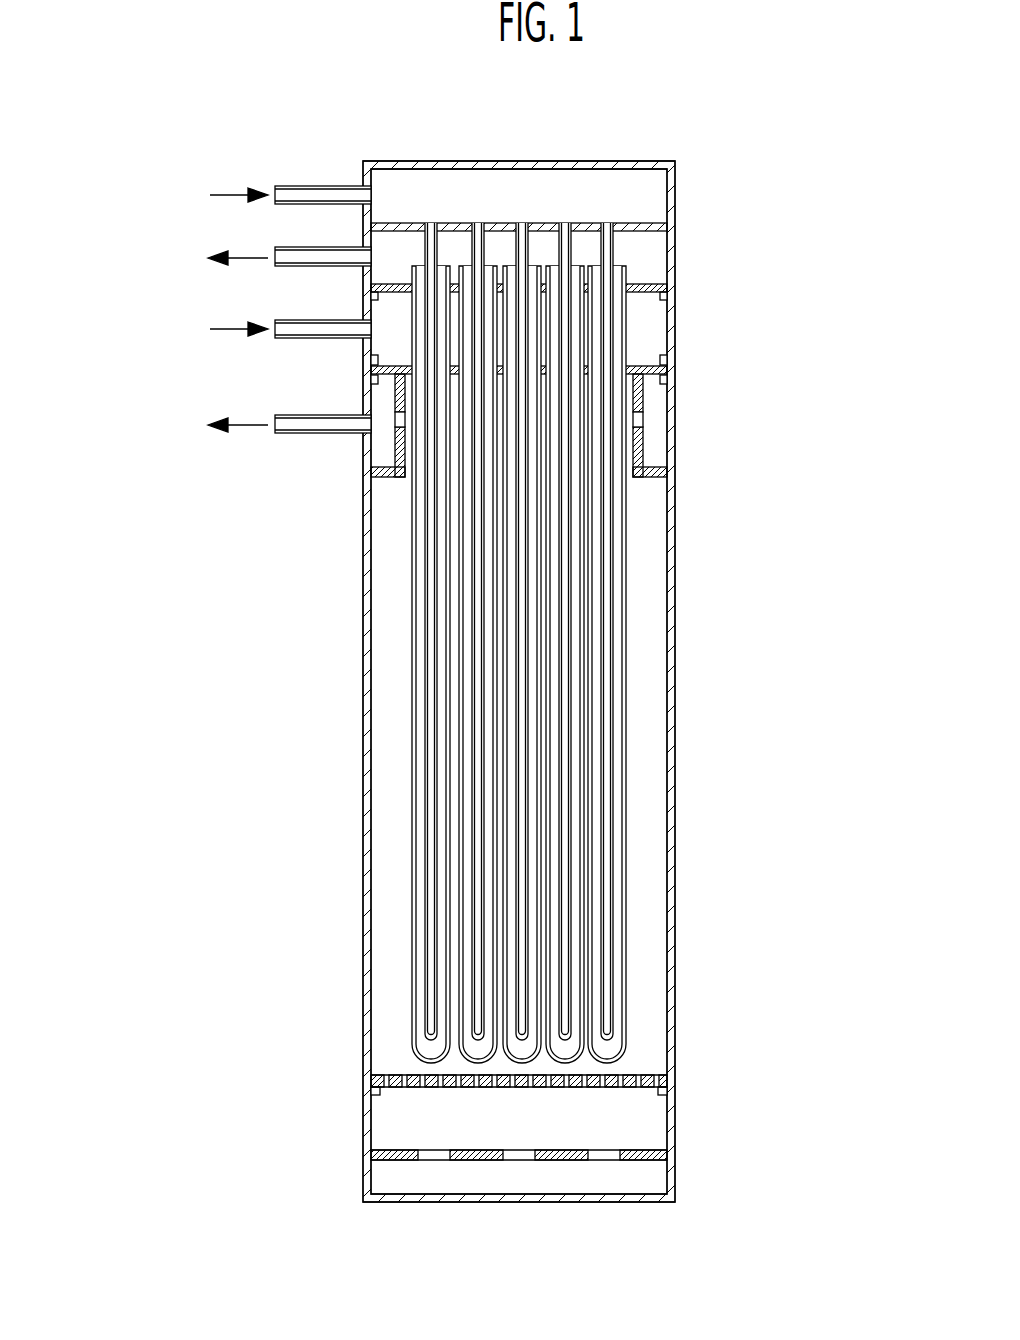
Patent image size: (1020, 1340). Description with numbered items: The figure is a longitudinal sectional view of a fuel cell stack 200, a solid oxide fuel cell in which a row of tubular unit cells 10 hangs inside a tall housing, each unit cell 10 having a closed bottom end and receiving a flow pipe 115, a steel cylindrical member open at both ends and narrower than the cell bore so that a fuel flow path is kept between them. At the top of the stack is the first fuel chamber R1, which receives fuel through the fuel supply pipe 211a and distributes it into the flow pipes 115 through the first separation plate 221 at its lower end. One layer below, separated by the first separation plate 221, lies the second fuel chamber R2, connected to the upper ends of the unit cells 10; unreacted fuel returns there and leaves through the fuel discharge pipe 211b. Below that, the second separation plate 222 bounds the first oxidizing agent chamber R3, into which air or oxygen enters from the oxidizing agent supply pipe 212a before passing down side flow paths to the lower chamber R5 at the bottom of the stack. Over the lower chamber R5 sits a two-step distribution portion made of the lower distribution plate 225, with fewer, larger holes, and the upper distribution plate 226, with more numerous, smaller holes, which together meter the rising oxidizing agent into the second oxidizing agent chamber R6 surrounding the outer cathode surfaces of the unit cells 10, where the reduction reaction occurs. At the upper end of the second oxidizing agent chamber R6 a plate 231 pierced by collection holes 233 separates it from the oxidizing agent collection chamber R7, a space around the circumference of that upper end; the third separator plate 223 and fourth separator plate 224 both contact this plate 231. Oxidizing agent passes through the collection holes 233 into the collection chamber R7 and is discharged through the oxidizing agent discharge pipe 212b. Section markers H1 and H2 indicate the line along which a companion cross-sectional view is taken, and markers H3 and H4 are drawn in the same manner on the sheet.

The fuel cell stack 200 is at (264, 79).
The unit cell 10 is at (627, 690).
The flow pipe 115 is at (427, 245).
The fuel supply pipe 211a is at (320, 186).
The fuel discharge pipe 211b is at (320, 247).
The oxidizing agent supply pipe 212a is at (320, 320).
The oxidizing agent discharge pipe 212b is at (320, 415).
The first separation plate 221 is at (650, 223).
The second separation plate 222 is at (650, 284).
The third separator plate 223 is at (650, 366).
The fourth separator plate 224 is at (655, 470).
The lower distribution plate 225 is at (648, 1150).
The upper distribution plate 226 is at (648, 1075).
The plate 231 is at (398, 460).
The collection hole 233 is at (643, 422).
The first fuel chamber R1 is at (629, 193).
The second fuel chamber R2 is at (389, 250).
The first oxidizing agent chamber R3 is at (646, 320).
The lower chamber R5 is at (454, 1183).
The second oxidizing agent chamber R6 is at (645, 879).
The oxidizing agent collection chamber R7 is at (385, 399).
The section line end H1 is at (130, 328).
The section line end H2 is at (730, 328).
The third height H3 is at (128, 423).
The fourth height H4 is at (730, 432).